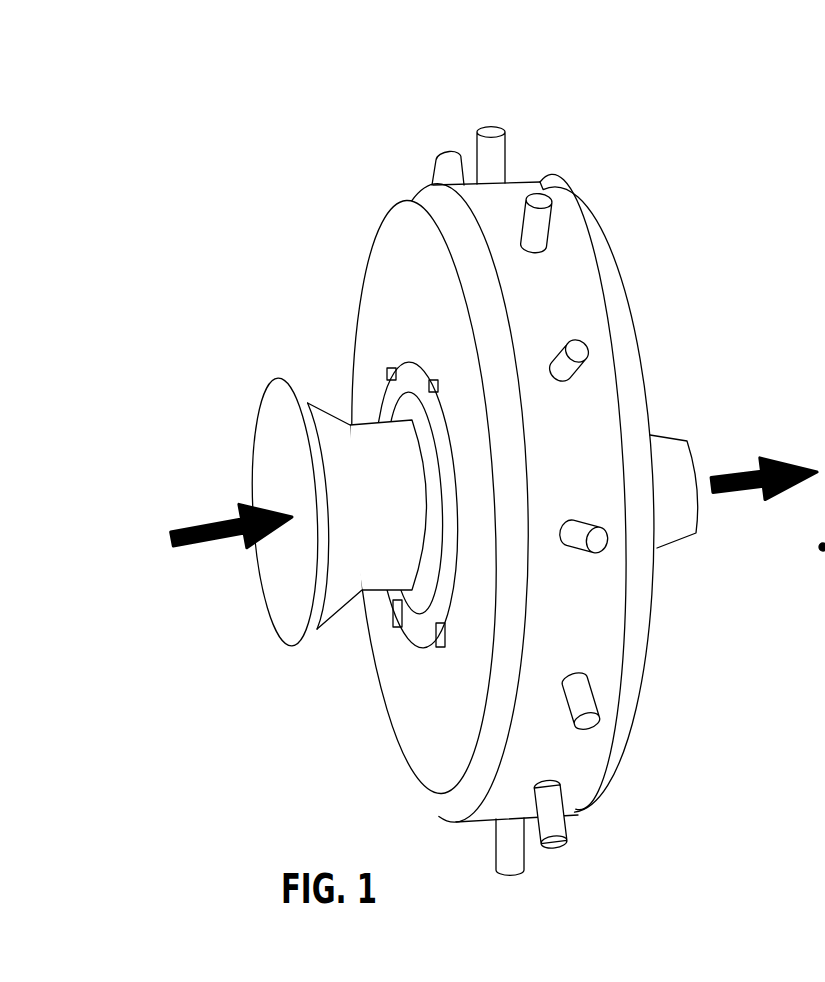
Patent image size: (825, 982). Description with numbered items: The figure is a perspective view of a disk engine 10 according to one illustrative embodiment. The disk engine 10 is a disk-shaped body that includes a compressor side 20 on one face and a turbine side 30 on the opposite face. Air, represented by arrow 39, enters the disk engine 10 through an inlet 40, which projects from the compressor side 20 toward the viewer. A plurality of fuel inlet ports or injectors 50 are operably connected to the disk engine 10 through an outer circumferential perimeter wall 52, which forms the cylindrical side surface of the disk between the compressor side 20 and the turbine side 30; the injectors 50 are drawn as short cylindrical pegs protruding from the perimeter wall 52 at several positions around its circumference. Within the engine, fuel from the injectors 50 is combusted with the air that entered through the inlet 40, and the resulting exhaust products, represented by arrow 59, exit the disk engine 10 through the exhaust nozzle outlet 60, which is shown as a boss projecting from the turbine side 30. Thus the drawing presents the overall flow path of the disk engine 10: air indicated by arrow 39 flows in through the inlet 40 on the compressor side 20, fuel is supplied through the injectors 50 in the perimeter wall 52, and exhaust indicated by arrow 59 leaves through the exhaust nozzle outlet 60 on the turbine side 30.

The disk engine 10 is at (474, 467).
The compressor side 20 is at (397, 282).
The turbine side 30 is at (633, 330).
The arrow representing air 39 is at (202, 542).
The inlet 40 is at (254, 430).
The fuel inlet ports or injectors 50 is at (498, 128).
The outer circumferential perimeter wall 52 is at (540, 288).
The arrow representing exhaust products 59 is at (742, 490).
The exhaust nozzle outlet 60 is at (694, 458).